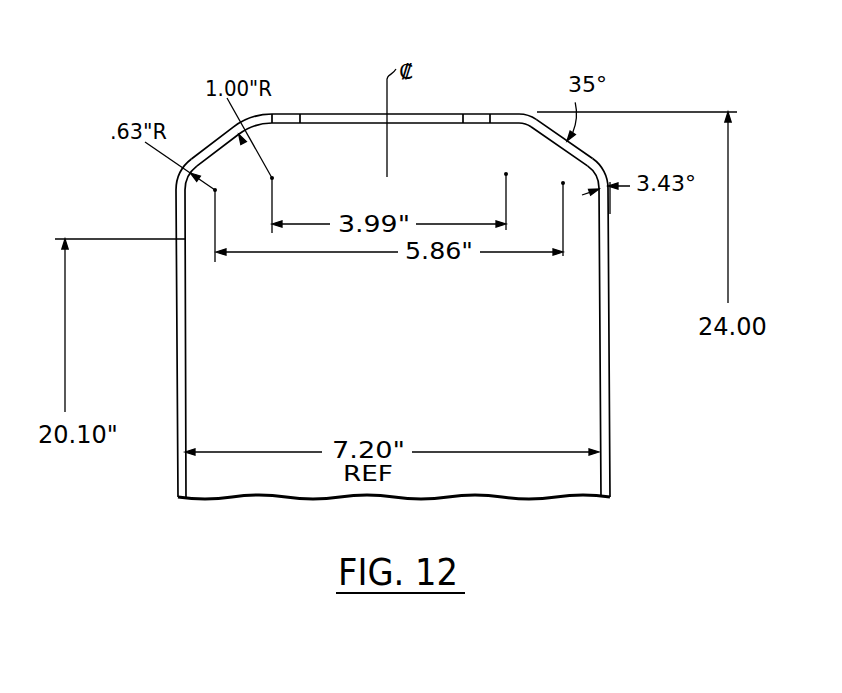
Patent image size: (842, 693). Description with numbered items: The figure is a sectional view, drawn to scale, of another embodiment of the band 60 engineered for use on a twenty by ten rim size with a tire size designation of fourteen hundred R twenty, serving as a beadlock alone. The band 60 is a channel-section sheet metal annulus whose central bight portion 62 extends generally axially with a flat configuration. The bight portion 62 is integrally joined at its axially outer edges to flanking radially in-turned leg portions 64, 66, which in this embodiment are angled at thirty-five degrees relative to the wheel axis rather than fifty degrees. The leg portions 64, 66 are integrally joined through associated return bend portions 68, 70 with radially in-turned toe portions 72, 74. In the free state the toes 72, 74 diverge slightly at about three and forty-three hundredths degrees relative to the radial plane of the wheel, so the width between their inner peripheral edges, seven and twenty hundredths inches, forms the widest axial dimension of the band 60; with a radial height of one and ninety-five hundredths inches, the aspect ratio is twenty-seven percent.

The band 60 is at (332, 111).
The central bight portion 62 is at (423, 113).
The leg portion 64 is at (212, 145).
The leg portion 66 is at (575, 147).
The return bend portion 68 is at (187, 172).
The return bend portion 70 is at (598, 165).
The toe portion 72 is at (176, 203).
The toe portion 74 is at (610, 220).